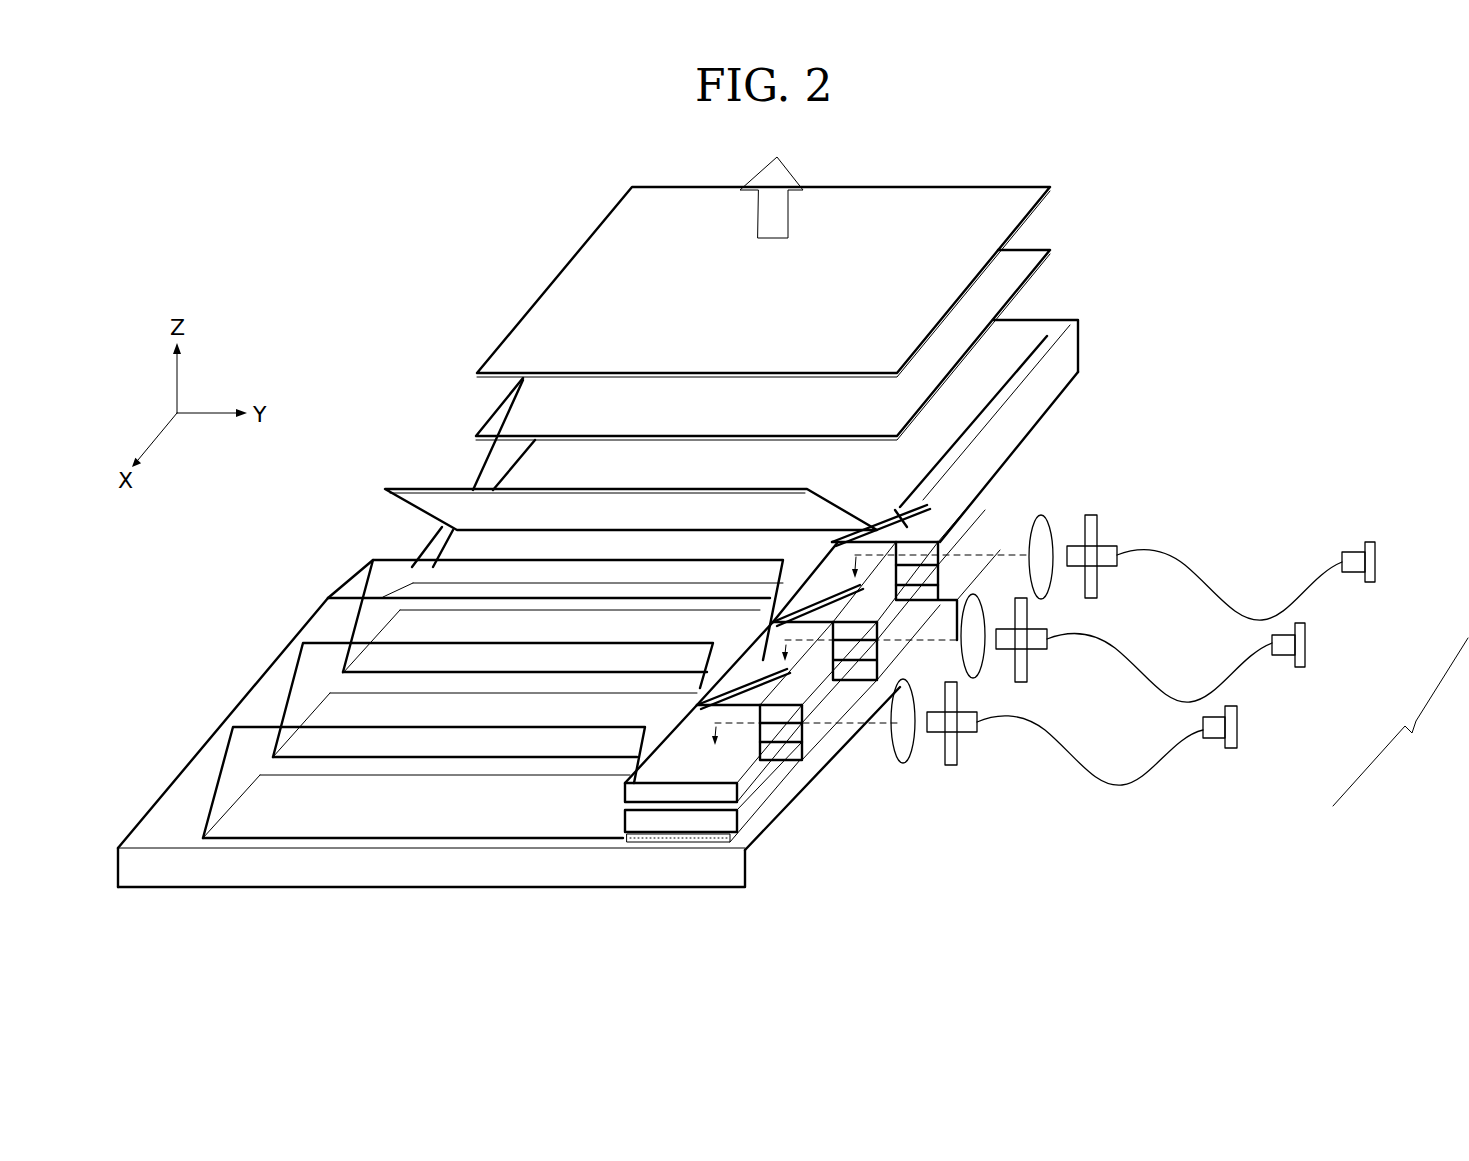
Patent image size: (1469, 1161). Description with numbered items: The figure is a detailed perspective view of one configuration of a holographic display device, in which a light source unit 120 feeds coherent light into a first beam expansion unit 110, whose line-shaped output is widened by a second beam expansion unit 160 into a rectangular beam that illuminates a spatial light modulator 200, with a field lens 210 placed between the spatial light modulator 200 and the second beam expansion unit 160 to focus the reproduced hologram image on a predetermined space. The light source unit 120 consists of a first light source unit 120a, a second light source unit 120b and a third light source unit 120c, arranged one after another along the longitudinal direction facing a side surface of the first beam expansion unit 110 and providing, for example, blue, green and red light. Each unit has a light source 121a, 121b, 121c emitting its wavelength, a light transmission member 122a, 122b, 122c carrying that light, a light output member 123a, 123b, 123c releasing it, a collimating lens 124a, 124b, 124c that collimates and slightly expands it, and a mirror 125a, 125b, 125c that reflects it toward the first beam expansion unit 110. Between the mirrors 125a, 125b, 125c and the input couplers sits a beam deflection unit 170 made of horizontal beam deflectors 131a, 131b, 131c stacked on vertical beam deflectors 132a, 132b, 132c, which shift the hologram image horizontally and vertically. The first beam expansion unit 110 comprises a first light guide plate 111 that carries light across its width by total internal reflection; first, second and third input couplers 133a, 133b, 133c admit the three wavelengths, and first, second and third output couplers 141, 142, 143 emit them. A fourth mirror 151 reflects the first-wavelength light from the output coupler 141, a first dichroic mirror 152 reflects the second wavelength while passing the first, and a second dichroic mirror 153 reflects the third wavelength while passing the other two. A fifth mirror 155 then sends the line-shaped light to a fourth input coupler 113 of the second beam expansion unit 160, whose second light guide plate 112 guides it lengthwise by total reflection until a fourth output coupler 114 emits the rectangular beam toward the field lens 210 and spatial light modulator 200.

The first beam expansion unit 110 is at (322, 541).
The first light guide plate 111 is at (432, 878).
The second light guide plate 112 is at (1050, 388).
The fourth input coupler 113 is at (453, 548).
The fourth output coupler 114 is at (1037, 338).
The light source unit 120 is at (1179, 660).
The first light source unit 120a is at (1109, 739).
The second light source unit 120b is at (1179, 655).
The third light source unit 120c is at (1248, 575).
The first light source 121a is at (1237, 727).
The second light source 121b is at (1305, 645).
The third light source 121c is at (1375, 560).
The first light transmission member 122a is at (1085, 760).
The second light transmission member 122b is at (1153, 675).
The third light transmission member 122c is at (1226, 597).
The first light output member 123a is at (957, 750).
The second light output member 123b is at (1027, 665).
The third light output member 123c is at (1097, 582).
The first collimating lens 124a is at (908, 757).
The second collimating lens 124b is at (978, 672).
The third collimating lens 124c is at (1045, 593).
The first mirror 125a is at (648, 770).
The second mirror 125b is at (757, 655).
The third mirror 125c is at (832, 557).
The first horizontal beam deflector 131a is at (667, 793).
The second horizontal beam deflector 131b is at (850, 660).
The third horizontal beam deflector 131c is at (910, 547).
The first vertical beam deflector 132a is at (690, 825).
The second vertical beam deflector 132b is at (835, 700).
The third vertical beam deflector 132c is at (940, 560).
The first input coupler 133a is at (710, 843).
The second input coupler 133b is at (778, 690).
The third input coupler 133c is at (945, 600).
The first output coupler 141 is at (273, 800).
The second output coupler 142 is at (343, 717).
The third output coupler 143 is at (413, 635).
The fourth mirror 151 is at (232, 753).
The first dichroic mirror 152 is at (302, 673).
The second dichroic mirror 153 is at (368, 590).
The fifth mirror 155 is at (425, 492).
The second beam expansion unit 160 is at (1060, 420).
The beam deflection unit 170 is at (733, 847).
The spatial light modulator 200 is at (1050, 191).
The field lens 210 is at (1050, 253).